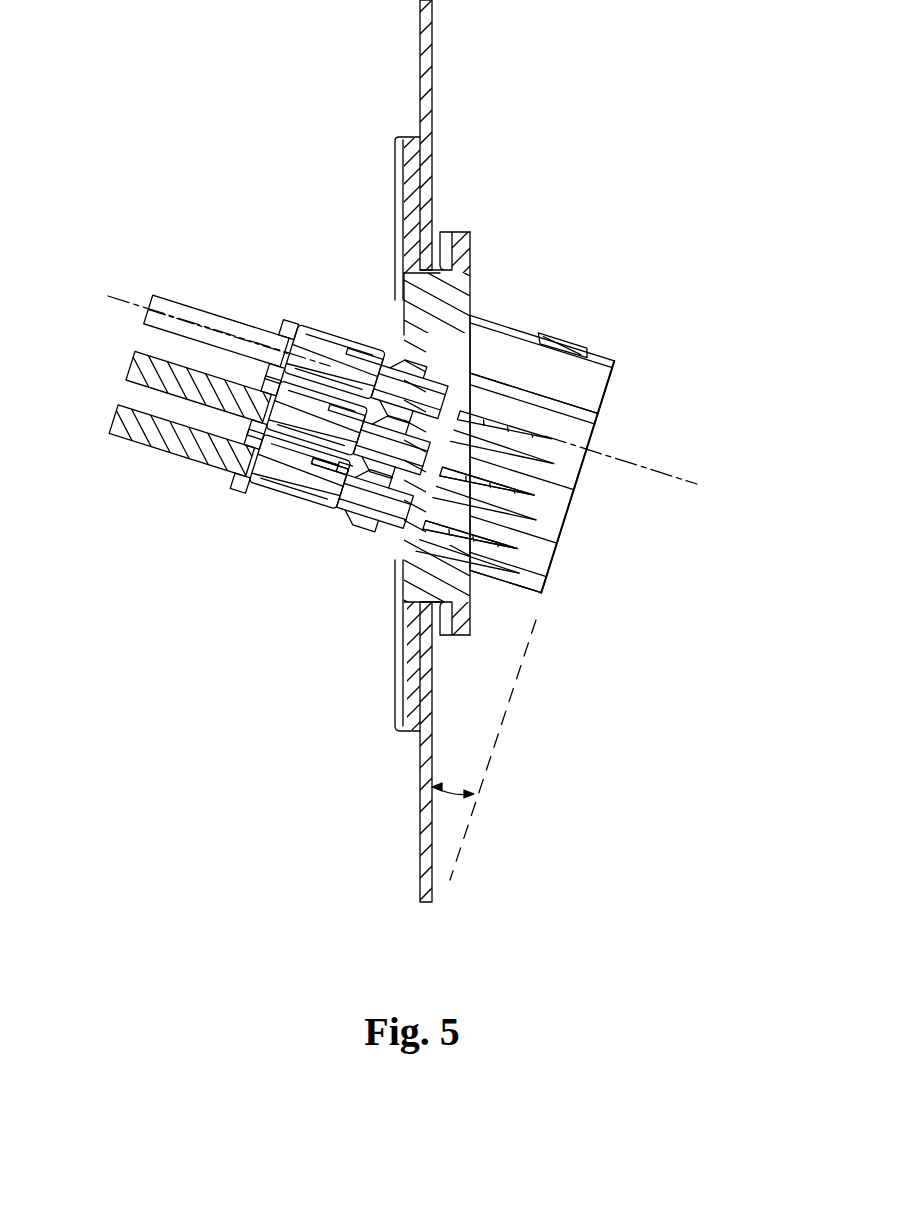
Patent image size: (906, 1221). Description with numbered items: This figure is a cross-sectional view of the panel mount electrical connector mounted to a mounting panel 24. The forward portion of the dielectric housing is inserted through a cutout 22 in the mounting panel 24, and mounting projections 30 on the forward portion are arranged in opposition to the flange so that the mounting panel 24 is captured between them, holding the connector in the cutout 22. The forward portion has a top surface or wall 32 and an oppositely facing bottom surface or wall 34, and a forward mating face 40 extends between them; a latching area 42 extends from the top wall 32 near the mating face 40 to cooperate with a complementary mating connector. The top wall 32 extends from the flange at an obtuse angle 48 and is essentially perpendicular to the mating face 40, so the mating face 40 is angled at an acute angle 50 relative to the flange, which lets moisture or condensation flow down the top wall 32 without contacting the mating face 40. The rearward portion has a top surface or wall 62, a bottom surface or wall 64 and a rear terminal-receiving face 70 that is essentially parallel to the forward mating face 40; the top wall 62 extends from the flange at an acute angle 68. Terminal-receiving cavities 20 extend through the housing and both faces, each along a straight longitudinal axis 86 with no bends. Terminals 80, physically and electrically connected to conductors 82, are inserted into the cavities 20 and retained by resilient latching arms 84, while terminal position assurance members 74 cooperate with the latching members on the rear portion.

The terminal-receiving cavities 20 is at (538, 547).
The cutout 22 is at (455, 285).
The mounting panel 24 is at (433, 77).
The mounting projections 30 is at (511, 382).
The top surface or wall 32 is at (533, 392).
The bottom surface or wall 34 is at (527, 605).
The forward mating face 40 is at (598, 422).
The latching area 42 is at (617, 357).
The obtuse angle 48 is at (515, 330).
The acute angle 50 is at (455, 790).
The top surface or wall 62 is at (345, 338).
The bottom surface or wall 64 is at (352, 525).
The acute angle 68 is at (401, 302).
The rear terminal-receiving face 70 is at (291, 318).
The terminal position assurance members 74 is at (240, 425).
The terminals 80 is at (397, 513).
The conductors 82 is at (157, 438).
The resilient latching arms 84 is at (342, 473).
The longitudinal axis 86 is at (673, 481).